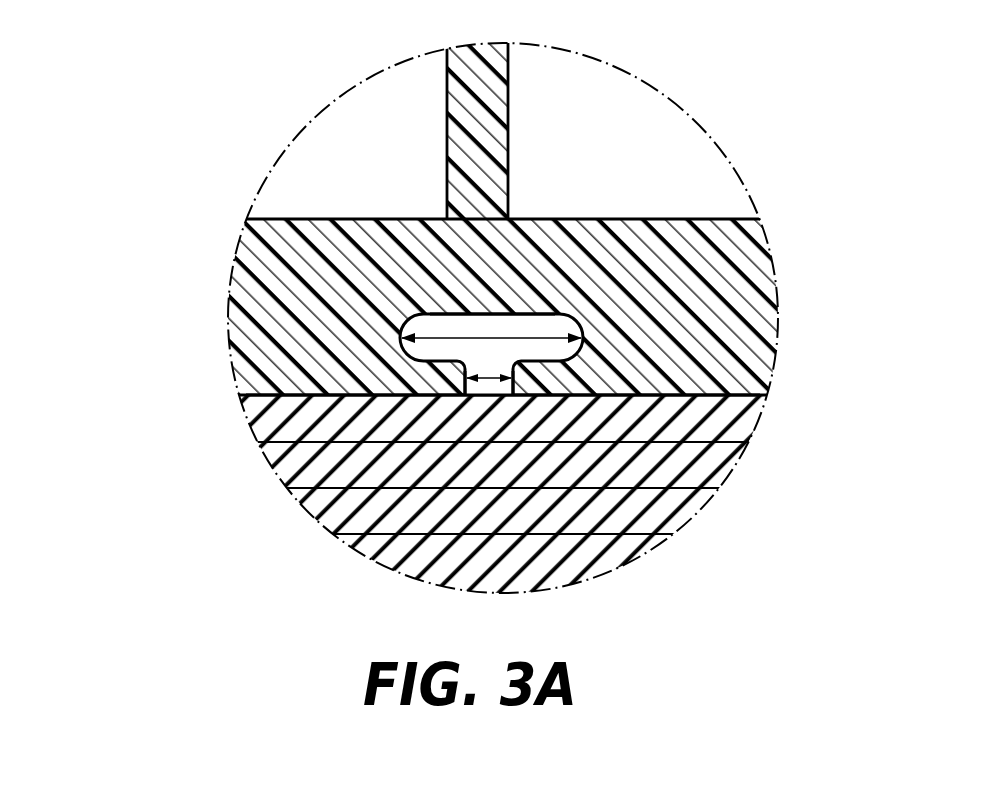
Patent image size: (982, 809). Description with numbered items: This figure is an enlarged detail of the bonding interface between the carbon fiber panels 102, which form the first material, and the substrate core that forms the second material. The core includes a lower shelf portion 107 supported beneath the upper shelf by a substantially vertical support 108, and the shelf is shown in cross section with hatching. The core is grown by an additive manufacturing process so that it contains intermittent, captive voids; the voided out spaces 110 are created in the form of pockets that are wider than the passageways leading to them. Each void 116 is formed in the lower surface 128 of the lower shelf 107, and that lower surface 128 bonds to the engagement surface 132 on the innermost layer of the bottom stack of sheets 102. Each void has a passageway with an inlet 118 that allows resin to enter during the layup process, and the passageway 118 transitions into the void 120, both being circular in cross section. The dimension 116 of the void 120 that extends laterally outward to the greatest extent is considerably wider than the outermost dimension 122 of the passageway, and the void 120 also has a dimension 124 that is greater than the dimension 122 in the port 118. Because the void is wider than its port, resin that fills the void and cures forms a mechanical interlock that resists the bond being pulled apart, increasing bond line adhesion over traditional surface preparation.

The carbon fiber panels 102 is at (268, 425).
The lower shelf portion 107 is at (580, 259).
The vertical supports 108 is at (484, 148).
The voided out spaces 110 is at (391, 143).
The void 116 is at (400, 320).
The passageway 118 is at (508, 397).
The void 120 is at (492, 314).
The outermost dimension of the passageway 122 is at (487, 380).
The dimension of the void 124 is at (478, 325).
The lower surface of the lower shelf 128 is at (600, 400).
The engagement surface 132 is at (390, 392).